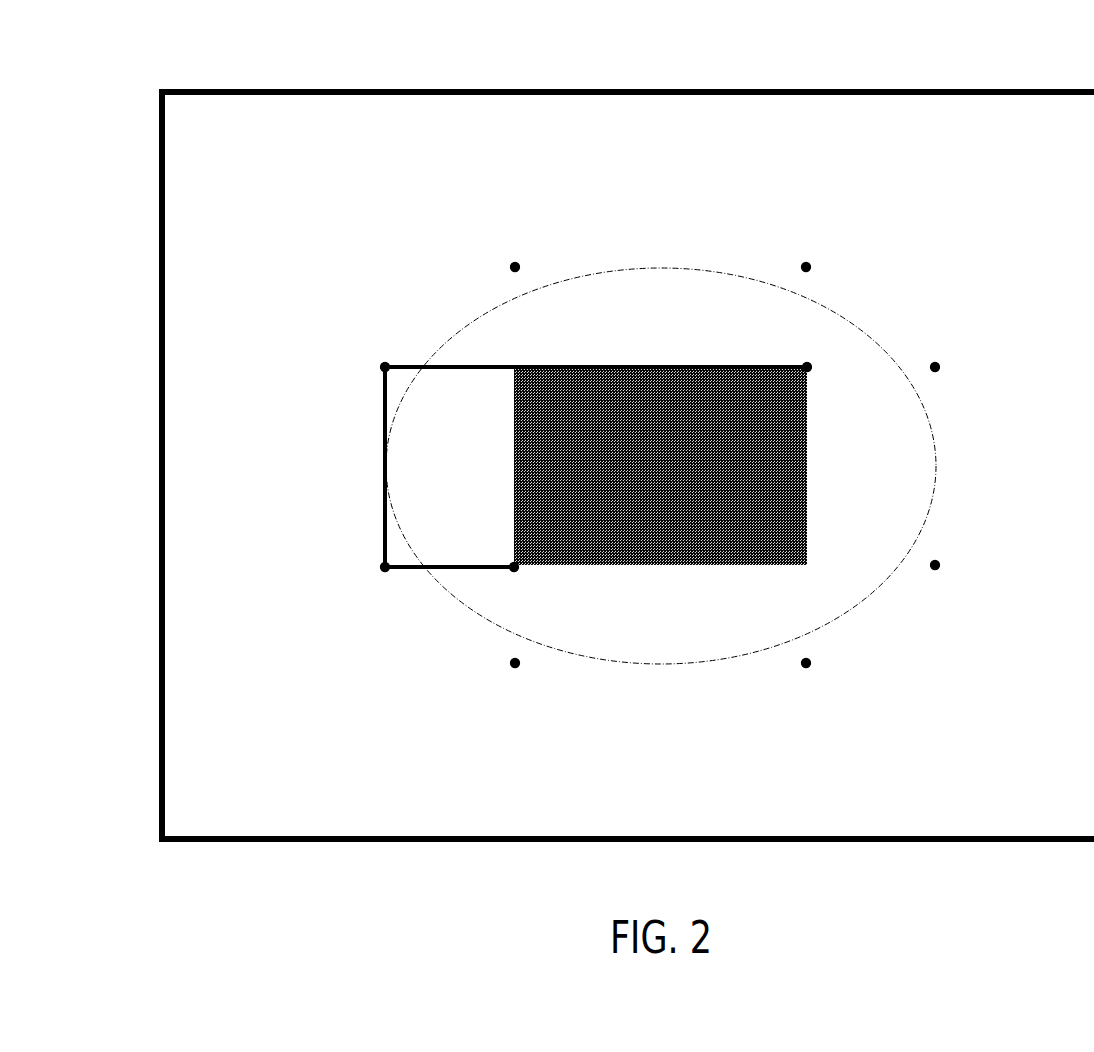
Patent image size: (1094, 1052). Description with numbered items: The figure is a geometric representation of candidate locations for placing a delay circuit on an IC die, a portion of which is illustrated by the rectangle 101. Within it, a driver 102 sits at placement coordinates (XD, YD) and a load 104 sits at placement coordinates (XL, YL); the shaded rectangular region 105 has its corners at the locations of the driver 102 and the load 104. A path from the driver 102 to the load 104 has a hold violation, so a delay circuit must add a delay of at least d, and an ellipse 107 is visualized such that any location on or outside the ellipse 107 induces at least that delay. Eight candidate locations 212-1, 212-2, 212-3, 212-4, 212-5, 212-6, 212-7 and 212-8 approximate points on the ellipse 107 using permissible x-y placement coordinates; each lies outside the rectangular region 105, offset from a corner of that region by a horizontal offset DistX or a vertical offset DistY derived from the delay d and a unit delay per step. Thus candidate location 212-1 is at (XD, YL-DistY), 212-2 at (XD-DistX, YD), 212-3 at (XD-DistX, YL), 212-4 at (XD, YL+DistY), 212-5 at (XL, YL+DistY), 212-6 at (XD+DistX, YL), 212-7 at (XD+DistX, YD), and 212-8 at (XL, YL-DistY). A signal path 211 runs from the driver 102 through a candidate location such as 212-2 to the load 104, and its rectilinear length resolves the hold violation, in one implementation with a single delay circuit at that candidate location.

The rectangle 101 is at (268, 90).
The driver 102 is at (512, 560).
The load 104 is at (804, 362).
The shaded rectangular region 105 is at (683, 566).
The ellipse 107 is at (575, 278).
The signal path 211 is at (498, 372).
The candidate location 212-1 is at (508, 668).
The candidate location 212-2 is at (381, 570).
The candidate location 212-3 is at (381, 370).
The candidate location 212-4 is at (511, 263).
The candidate location 212-5 is at (802, 263).
The candidate location 212-6 is at (942, 362).
The candidate location 212-7 is at (940, 560).
The candidate location 212-8 is at (800, 668).